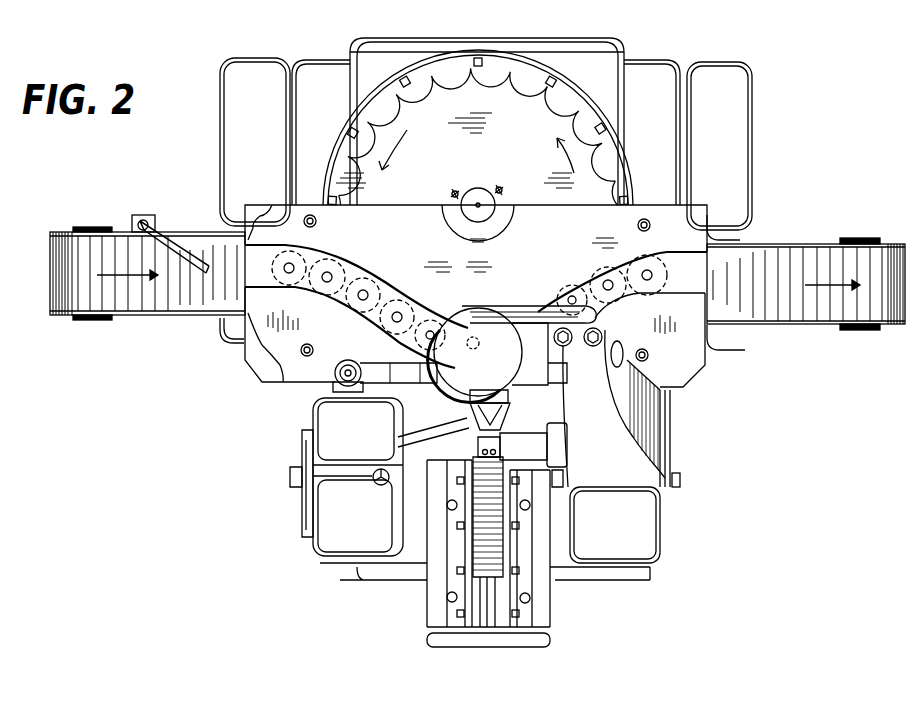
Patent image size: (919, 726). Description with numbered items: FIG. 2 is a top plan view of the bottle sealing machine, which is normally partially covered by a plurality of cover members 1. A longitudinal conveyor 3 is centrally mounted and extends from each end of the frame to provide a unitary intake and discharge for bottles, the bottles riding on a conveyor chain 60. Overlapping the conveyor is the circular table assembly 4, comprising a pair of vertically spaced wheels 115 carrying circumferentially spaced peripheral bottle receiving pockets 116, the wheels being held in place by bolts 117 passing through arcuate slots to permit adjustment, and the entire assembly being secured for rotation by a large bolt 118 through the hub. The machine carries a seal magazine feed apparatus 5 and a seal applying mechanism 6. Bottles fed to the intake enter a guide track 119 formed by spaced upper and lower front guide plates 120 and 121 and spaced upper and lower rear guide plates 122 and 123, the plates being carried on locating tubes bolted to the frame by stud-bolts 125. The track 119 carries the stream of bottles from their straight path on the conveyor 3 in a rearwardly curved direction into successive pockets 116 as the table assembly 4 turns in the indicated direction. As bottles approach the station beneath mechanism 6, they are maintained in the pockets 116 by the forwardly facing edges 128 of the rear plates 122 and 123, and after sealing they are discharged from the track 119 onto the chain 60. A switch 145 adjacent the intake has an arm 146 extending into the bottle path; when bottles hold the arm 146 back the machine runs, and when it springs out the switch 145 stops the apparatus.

The cover members 1 is at (752, 136).
The longitudinal conveyor 3 is at (834, 240).
The circular table assembly 4 is at (342, 103).
The seal magazine feed apparatus 5 is at (543, 588).
The seal applying mechanism 6 is at (486, 300).
The conveyor chain 60 is at (73, 250).
The wheels 115 is at (538, 118).
The bottle receiving pockets 116 is at (352, 162).
The bolts 117 is at (452, 192).
The large bolt 118 is at (481, 206).
The guide track 119 is at (258, 268).
The upper front guide plate 120 is at (294, 207).
The lower front guide plate 121 is at (267, 196).
The upper rear guide plate 122 is at (302, 378).
The lower rear guide plate 123 is at (263, 376).
The stud-bolts 125 is at (316, 219).
The forwardly facing edges 128 is at (402, 338).
The switch 145 is at (132, 224).
The arm 146 is at (192, 246).